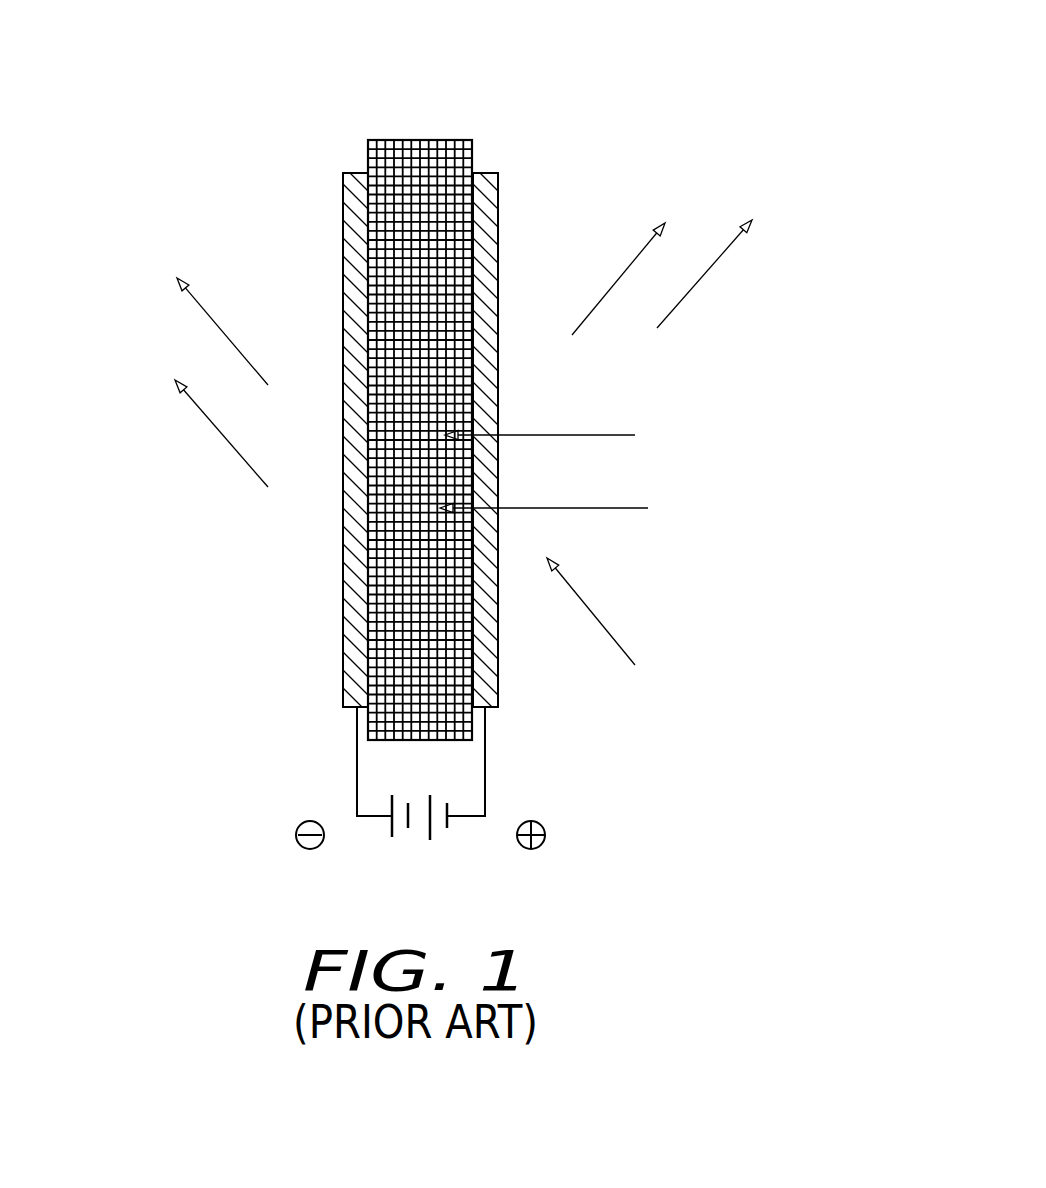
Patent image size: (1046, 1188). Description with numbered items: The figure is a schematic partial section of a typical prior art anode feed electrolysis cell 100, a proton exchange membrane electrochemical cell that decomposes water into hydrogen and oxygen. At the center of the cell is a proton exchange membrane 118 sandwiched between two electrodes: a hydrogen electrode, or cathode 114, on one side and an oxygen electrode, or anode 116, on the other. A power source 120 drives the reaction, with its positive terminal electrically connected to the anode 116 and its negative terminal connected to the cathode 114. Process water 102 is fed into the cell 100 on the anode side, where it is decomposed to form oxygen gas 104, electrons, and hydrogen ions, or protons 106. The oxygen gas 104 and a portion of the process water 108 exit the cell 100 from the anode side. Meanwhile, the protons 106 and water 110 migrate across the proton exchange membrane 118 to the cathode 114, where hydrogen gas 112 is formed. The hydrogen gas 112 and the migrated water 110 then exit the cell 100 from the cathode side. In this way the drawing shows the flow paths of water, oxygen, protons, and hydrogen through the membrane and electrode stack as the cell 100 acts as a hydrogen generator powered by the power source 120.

The anode feed electrolysis cell 100 is at (426, 375).
The process water 102 is at (613, 643).
The oxygen gas 104 is at (641, 252).
The hydrogen ions (protons) 106 is at (557, 433).
The portion of the process water 108 is at (723, 257).
The water 110 is at (212, 423).
The hydrogen gas 112 is at (205, 310).
The hydrogen electrode (cathode) 114 is at (343, 191).
The oxygen electrode (anode) 116 is at (498, 186).
The proton exchange membrane 118 is at (392, 140).
The power source 120 is at (545, 766).